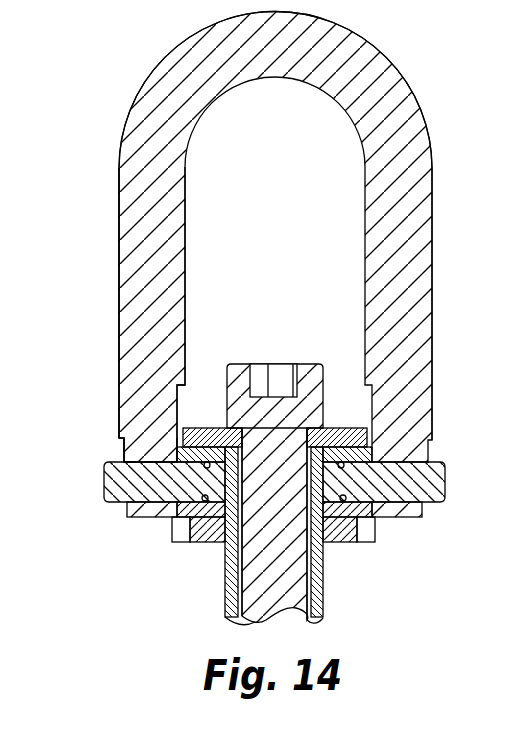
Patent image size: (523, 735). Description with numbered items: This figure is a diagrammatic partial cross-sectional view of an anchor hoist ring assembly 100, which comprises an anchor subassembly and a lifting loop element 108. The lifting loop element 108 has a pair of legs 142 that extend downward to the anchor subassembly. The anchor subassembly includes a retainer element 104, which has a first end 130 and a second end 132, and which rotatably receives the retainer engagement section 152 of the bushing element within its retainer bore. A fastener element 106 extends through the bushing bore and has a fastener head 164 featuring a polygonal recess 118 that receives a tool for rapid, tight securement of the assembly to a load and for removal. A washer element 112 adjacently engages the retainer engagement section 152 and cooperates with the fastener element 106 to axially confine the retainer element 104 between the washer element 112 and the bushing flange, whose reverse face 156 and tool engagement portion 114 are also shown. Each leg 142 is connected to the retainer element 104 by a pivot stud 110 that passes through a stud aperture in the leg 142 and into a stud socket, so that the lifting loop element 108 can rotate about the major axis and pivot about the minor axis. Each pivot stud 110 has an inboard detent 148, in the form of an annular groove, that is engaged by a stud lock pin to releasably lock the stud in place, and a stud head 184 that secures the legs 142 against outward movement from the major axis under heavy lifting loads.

The anchor hoist ring assembly 100 is at (81, 131).
The lifting loop element 108 is at (376, 52).
The leg 142 is at (118, 303).
The first end 130 is at (118, 432).
The fastener head 164 is at (322, 392).
The polygonal recess 118 is at (278, 372).
The fastener element 106 is at (300, 582).
The reverse face 156 is at (345, 535).
The washer element 112 is at (207, 425).
The retainer engagement section 152 is at (345, 456).
The stud head 184 is at (108, 482).
The pivot stud 110 is at (152, 488).
The second end 132 is at (363, 518).
The retainer element 104 is at (183, 545).
The tool engagement portion 114 is at (370, 533).
The inboard detent 148 is at (207, 558).